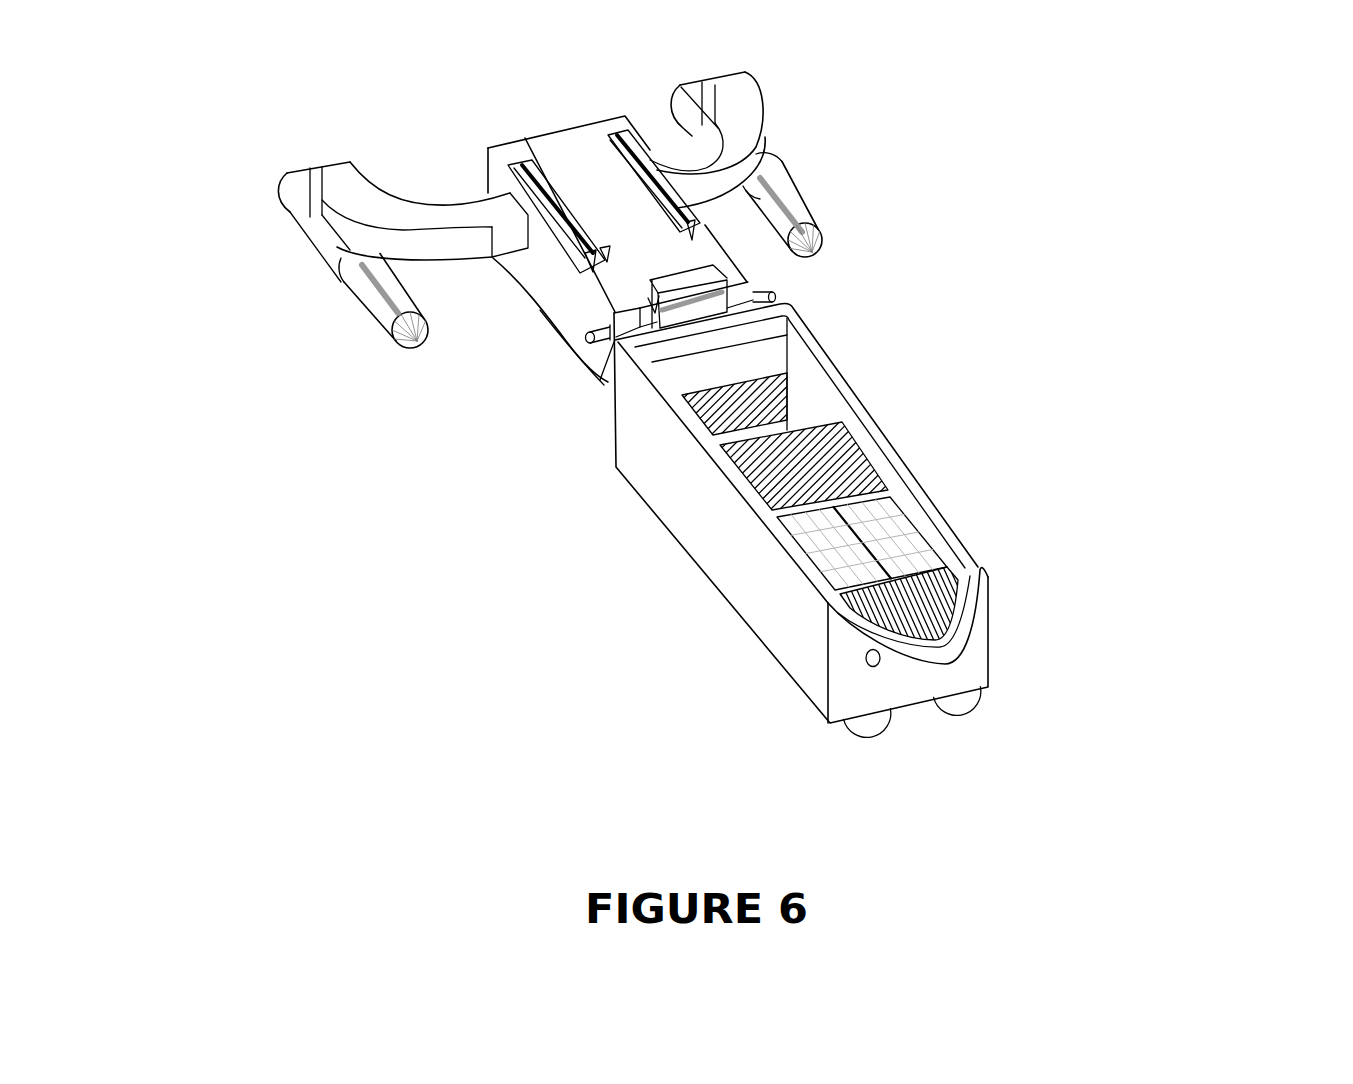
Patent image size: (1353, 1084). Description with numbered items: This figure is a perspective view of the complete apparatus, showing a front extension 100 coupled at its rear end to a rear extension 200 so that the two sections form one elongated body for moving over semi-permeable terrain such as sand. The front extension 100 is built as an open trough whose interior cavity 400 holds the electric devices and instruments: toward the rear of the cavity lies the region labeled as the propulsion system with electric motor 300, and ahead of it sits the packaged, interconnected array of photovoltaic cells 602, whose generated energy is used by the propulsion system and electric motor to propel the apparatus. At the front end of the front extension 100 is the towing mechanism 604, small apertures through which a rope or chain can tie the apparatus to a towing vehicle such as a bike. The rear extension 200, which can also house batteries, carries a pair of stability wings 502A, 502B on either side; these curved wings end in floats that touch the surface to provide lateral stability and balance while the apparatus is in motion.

The front extension 100 is at (670, 483).
The rear extension 200 is at (550, 300).
The data measuring instruments 300 is at (778, 395).
The interior cavity 400 is at (857, 450).
The stability wing 502A is at (748, 104).
The stability wing 502B is at (338, 188).
The photovoltaic cells 602 is at (890, 532).
The towing mechanism 604 is at (876, 665).